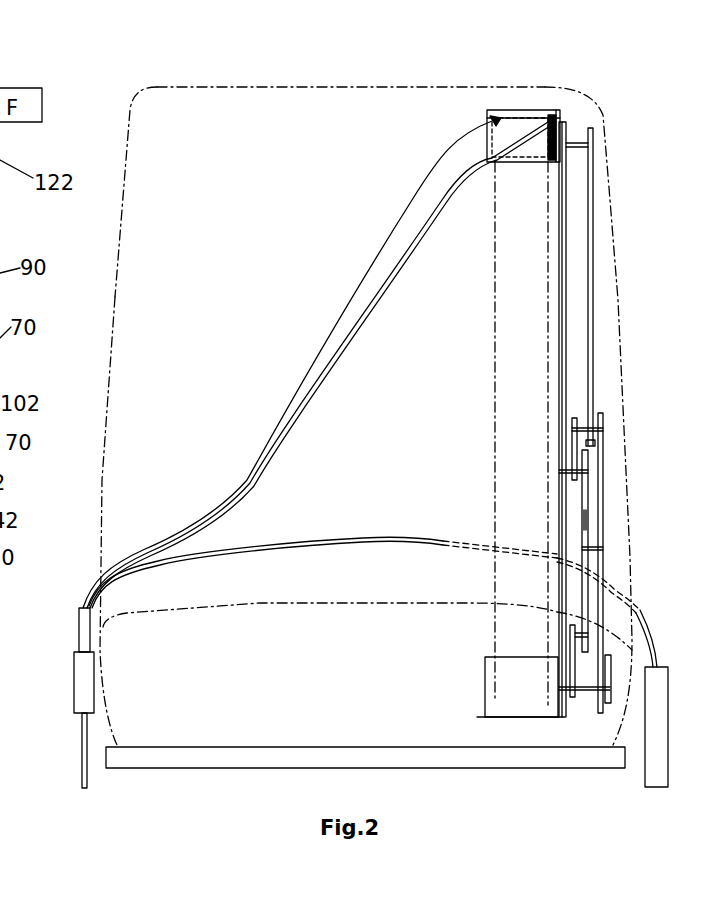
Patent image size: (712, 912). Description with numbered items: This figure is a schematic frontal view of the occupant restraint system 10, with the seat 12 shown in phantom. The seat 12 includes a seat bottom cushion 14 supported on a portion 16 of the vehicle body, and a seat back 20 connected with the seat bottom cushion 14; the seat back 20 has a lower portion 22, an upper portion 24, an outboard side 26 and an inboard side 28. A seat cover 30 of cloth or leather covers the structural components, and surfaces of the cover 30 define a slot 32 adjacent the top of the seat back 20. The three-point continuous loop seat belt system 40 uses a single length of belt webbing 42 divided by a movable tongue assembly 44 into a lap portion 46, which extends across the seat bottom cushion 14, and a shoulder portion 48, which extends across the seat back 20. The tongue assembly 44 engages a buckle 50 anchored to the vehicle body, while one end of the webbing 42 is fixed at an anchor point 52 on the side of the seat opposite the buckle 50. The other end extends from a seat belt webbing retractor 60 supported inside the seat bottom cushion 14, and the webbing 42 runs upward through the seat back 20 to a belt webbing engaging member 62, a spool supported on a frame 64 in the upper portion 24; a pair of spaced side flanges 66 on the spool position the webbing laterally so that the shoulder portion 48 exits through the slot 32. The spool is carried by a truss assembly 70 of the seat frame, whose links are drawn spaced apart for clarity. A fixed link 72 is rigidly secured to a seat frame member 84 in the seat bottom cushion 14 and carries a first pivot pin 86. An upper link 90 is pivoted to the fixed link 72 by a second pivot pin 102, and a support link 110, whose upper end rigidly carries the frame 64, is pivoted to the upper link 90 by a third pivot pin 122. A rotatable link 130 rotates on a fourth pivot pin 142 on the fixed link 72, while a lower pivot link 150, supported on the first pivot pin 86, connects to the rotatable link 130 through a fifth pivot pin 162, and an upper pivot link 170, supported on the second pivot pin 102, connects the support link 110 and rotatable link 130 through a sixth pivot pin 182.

The occupant restraint system 10 is at (82, 382).
The seat 12 is at (96, 322).
The seat bottom cushion 14 is at (270, 602).
The portion of the body of the vehicle 16 is at (227, 770).
The seat back 20 is at (297, 72).
The lower portion 22 is at (132, 540).
The upper portion 24 is at (187, 157).
The outboard side 26 is at (618, 272).
The inboard side 28 is at (115, 257).
The seat cover 30 is at (387, 100).
The slot 32 is at (522, 112).
The seat belt system 40 is at (238, 393).
The belt webbing 42 is at (299, 357).
The tongue assembly 44 is at (79, 625).
The lap portion 46 is at (403, 542).
The shoulder portion 48 is at (310, 387).
The buckle 50 is at (74, 688).
The anchor point 52 is at (668, 768).
The seat belt webbing retractor 60 is at (482, 700).
The belt webbing engaging member 62 is at (566, 128).
The frame 64 is at (490, 112).
The side flanges 66 is at (457, 133).
The truss assembly 70 is at (536, 332).
The fixed link 72 is at (607, 465).
The seat frame member 84 is at (612, 683).
The first pivot pin 86 is at (585, 693).
The upper link 90 is at (595, 195).
The second pivot pin 102 is at (582, 428).
The support link 110 is at (558, 277).
The third pivot pin 122 is at (593, 140).
The rotatable link 130 is at (587, 517).
The fourth pivot pin 142 is at (597, 541).
The lower pivot link 150 is at (570, 647).
The fifth pivot pin 162 is at (580, 630).
The upper pivot link 170 is at (572, 452).
The sixth pivot pin 182 is at (572, 474).